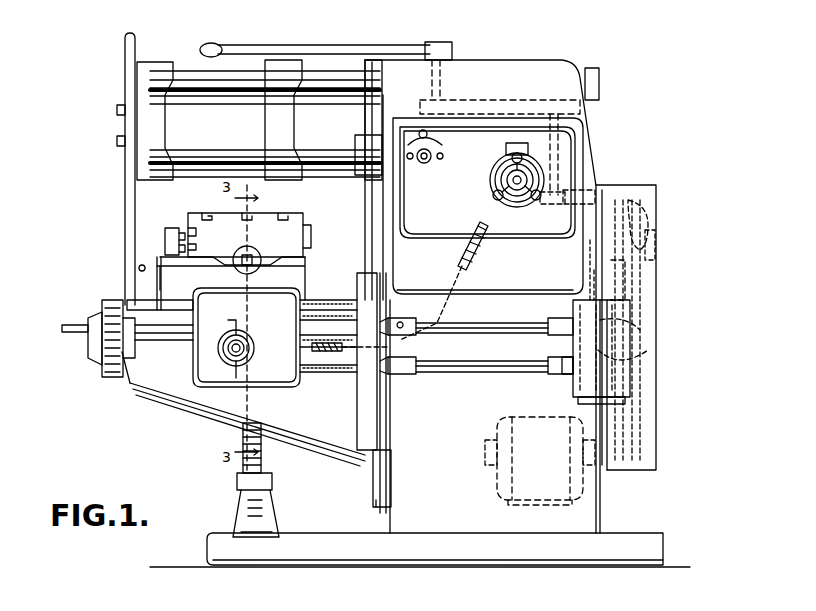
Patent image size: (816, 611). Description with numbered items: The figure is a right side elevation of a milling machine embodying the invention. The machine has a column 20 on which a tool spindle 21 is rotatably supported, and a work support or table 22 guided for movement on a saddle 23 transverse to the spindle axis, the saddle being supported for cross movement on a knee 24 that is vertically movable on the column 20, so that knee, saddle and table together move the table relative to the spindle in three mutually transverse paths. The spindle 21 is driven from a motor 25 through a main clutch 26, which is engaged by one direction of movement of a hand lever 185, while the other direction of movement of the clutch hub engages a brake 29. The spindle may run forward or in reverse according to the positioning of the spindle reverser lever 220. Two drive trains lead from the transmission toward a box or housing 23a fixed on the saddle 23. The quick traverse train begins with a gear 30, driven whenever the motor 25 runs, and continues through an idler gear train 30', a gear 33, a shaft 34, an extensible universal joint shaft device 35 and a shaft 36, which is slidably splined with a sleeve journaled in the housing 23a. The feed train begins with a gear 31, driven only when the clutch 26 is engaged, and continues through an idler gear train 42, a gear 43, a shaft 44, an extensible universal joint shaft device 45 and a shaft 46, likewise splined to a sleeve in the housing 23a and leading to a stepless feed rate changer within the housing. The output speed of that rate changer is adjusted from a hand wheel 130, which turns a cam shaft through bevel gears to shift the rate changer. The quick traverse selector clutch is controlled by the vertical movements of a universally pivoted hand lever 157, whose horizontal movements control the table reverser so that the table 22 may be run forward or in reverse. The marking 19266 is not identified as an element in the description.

The hand lever 185 is at (200, 46).
The column 20 is at (498, 72).
The spindle reverser lever 220 is at (418, 128).
The tool spindle 21 is at (358, 138).
The table 22 is at (268, 216).
The hand lever 157 is at (140, 268).
The saddle 23 is at (294, 278).
The shaft 36 is at (356, 290).
The feed screw 19266 is at (483, 262).
The gear 31 is at (590, 245).
The idler gear train 42 is at (590, 276).
The gear 30 is at (631, 225).
The main clutch 26 is at (645, 225).
The brake 29 is at (655, 245).
The idler gear train 30' is at (654, 280).
The extensible universal joint shaft device 35 is at (458, 323).
The gear 33 is at (625, 325).
The shaft 34 is at (620, 356).
The hand wheel 130 is at (214, 346).
The shaft 46 is at (330, 368).
The extensible universal joint shaft device 45 is at (495, 378).
The shaft 44 is at (573, 372).
The gear 43 is at (601, 352).
The knee 24 is at (137, 390).
The housing 23a is at (218, 384).
The motor 25 is at (492, 470).